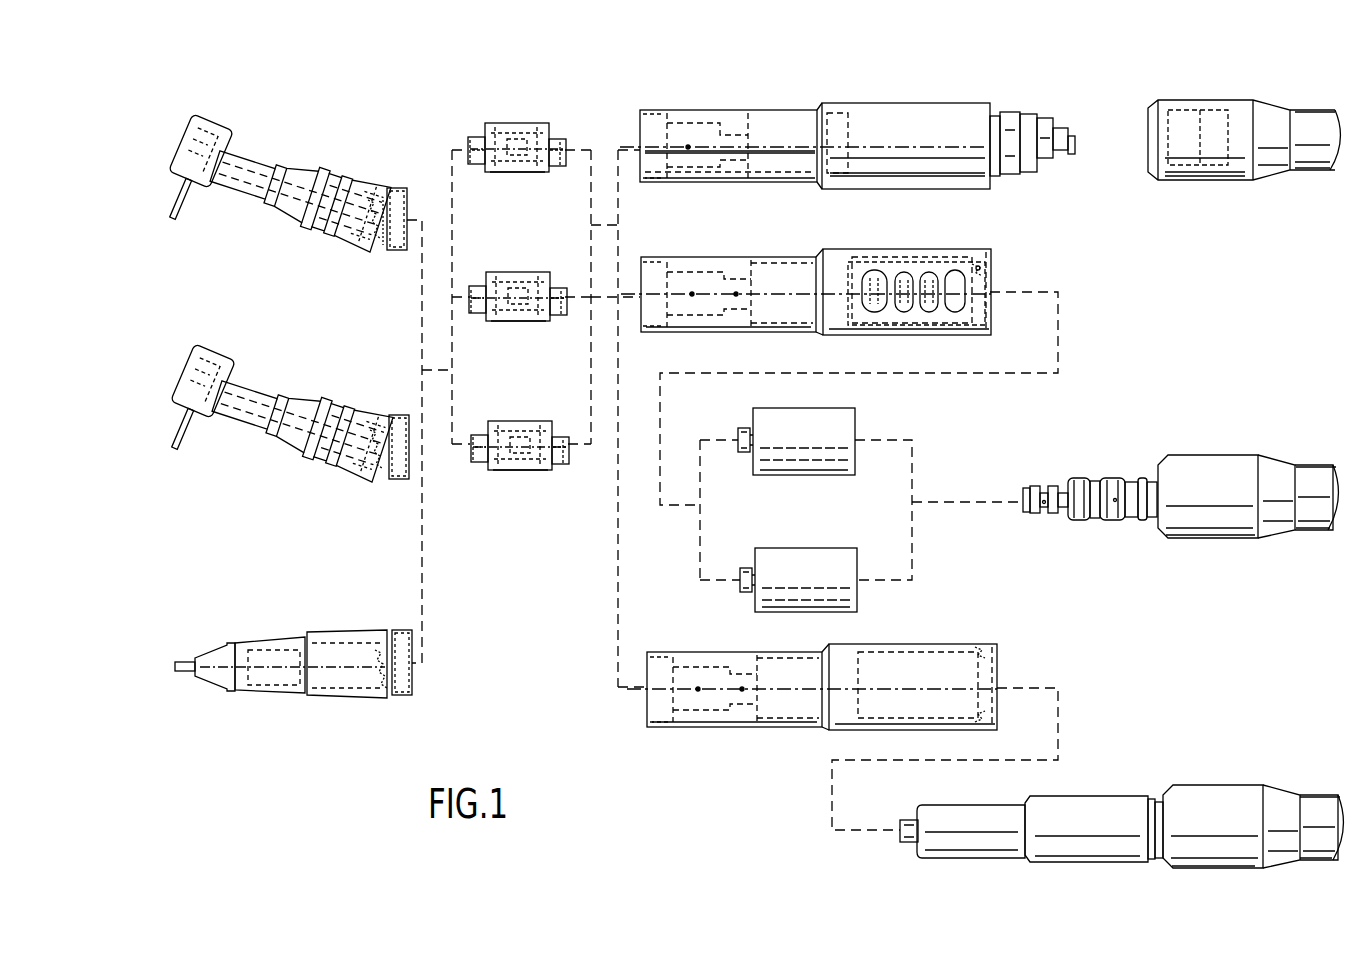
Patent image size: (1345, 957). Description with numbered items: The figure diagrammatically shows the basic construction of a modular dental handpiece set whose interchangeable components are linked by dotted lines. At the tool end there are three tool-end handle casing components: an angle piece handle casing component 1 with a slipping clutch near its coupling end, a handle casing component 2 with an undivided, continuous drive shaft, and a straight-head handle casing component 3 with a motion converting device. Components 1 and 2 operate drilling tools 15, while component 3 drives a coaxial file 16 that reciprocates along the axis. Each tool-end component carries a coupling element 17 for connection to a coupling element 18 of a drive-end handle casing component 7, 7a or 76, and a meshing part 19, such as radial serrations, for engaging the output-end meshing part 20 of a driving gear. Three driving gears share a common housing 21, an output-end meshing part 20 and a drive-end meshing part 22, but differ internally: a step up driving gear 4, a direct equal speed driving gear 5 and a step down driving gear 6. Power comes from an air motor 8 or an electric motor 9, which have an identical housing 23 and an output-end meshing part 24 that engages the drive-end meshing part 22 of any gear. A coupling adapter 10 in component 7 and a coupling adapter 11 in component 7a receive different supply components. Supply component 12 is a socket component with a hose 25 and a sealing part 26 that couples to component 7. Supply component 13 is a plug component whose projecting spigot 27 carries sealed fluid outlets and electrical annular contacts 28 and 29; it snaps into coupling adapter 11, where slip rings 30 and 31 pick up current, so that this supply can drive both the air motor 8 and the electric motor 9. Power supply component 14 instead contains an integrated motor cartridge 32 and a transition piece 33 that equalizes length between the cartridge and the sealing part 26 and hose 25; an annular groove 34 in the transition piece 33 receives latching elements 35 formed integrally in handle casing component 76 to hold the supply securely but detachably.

The tool-end handle casing component 1 is at (300, 150).
The tool-end handle casing component 2 is at (290, 368).
The tool-end handle casing component 3 is at (280, 630).
The step up driving gear 4 is at (500, 124).
The direct equal speed driving gear 5 is at (502, 270).
The step down driving gear 6 is at (508, 418).
The drive-handle casing component 7 is at (728, 186).
The drive-handle casing component 7a is at (752, 251).
The drive-handle casing component 76 is at (700, 646).
The air motor 8 is at (870, 408).
The electric motor 9 is at (865, 560).
The coupling adapter 10 is at (1032, 178).
The coupling adapter 11 is at (955, 262).
The supply component 12 is at (1238, 188).
The supply component 13 is at (1203, 448).
The power supply component 14 is at (1181, 783).
The drilling tool 15 is at (183, 210).
The file 16 is at (187, 658).
The coupling element 17 is at (396, 187).
The coupling element 18 is at (660, 184).
The meshing part 19 is at (372, 242).
The output-end meshing part 20 is at (478, 166).
The housing 21 is at (528, 173).
The drive-end meshing part 22 is at (558, 139).
The housing 23 is at (795, 476).
The output-end meshing part 24 is at (738, 442).
The hose 25 is at (1318, 176).
The sealing part 26 is at (1178, 184).
The projecting spigot 27 is at (1091, 528).
The electrical annular contact 28 is at (1078, 478).
The electrical annular contact 29 is at (1131, 475).
The slip ring 30 is at (905, 268).
The slip ring 31 is at (985, 268).
The motor cartridge 32 is at (963, 810).
The transition piece 33 is at (1068, 806).
The annular groove 34 is at (1151, 800).
The latching elements 35 is at (1000, 648).